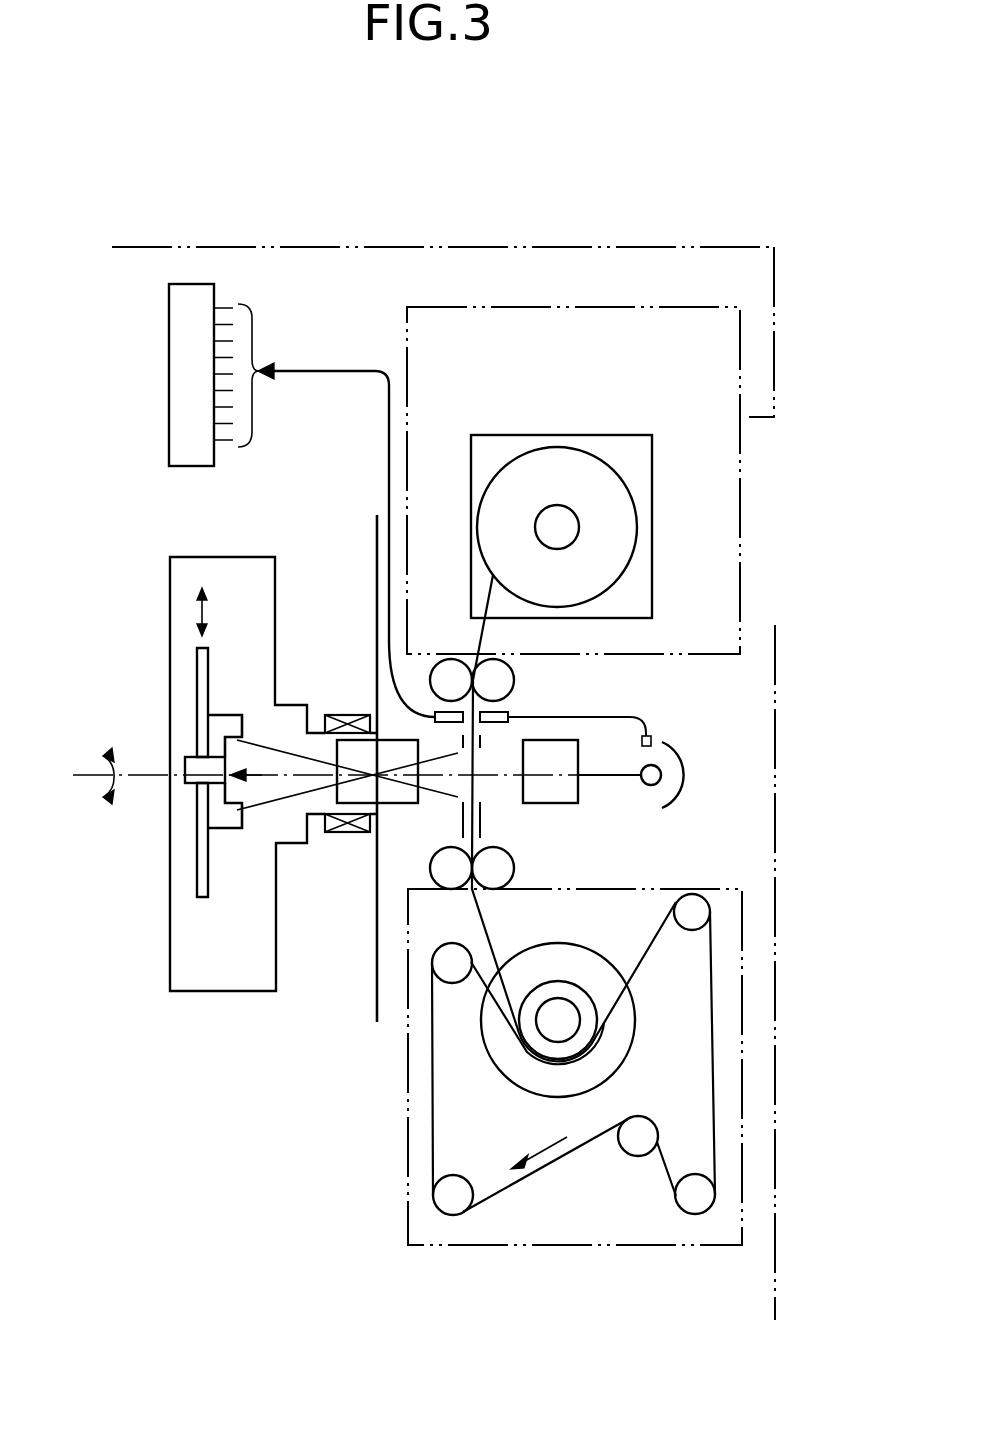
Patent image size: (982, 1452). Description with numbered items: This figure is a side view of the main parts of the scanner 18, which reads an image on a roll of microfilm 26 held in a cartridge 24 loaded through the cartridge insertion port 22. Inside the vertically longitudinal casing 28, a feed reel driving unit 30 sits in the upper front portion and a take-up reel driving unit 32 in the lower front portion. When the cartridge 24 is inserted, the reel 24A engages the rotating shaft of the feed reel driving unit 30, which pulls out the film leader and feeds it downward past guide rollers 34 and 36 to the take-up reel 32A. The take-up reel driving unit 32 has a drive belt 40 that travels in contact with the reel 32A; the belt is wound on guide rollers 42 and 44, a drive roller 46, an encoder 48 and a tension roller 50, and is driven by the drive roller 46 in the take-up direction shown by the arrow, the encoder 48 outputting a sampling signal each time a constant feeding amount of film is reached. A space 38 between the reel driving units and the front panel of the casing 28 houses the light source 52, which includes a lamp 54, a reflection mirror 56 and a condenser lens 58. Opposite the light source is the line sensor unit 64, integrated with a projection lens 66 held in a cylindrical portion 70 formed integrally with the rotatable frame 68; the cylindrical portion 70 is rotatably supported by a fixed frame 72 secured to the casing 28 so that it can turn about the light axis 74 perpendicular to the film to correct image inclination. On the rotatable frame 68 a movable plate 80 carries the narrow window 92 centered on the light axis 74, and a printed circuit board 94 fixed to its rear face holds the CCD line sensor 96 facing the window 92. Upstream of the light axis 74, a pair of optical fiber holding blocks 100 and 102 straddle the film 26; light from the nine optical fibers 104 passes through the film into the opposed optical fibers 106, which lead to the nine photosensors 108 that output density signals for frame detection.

The scanner 18 is at (458, 248).
The cartridge insertion port 22 is at (760, 504).
The cartridge 24 is at (608, 435).
The reel 24A is at (632, 500).
The microfilm 26 is at (480, 912).
The casing 28 is at (343, 247).
The feed reel driving unit 30 is at (776, 294).
The take-up reel driving unit 32 is at (775, 1151).
The take-up reel 32A is at (628, 1058).
The guide rollers 34 is at (452, 659).
The guide rollers 36 is at (431, 868).
The space 38 is at (735, 738).
The drive belt 40 is at (742, 1091).
The guide roller 42 is at (452, 984).
The guide roller 44 is at (711, 912).
The drive roller 46 is at (695, 1214).
The encoder 48 is at (638, 1156).
The tension roller 50 is at (453, 1215).
The light source 52 is at (706, 776).
The lamp 54 is at (661, 783).
The reflection mirror 56 is at (662, 800).
The condenser lens 58 is at (565, 805).
The line sensor unit 64 is at (158, 606).
The projection lens 66 is at (410, 737).
The rotatable frame 68 is at (277, 919).
The cylindrical portion 70 is at (388, 806).
The fixed frame 72 is at (377, 538).
The light axis 74 is at (605, 775).
The movable plate 80 is at (237, 828).
The window 92 is at (227, 758).
The printed circuit board 94 is at (197, 665).
The CCD line sensor 96 is at (192, 783).
The optical fiber holding block 100 is at (510, 718).
The optical fiber holding block 102 is at (437, 697).
The optical fibers 104 is at (645, 718).
The optical fibers 106 is at (345, 371).
The photosensors 108 is at (188, 467).